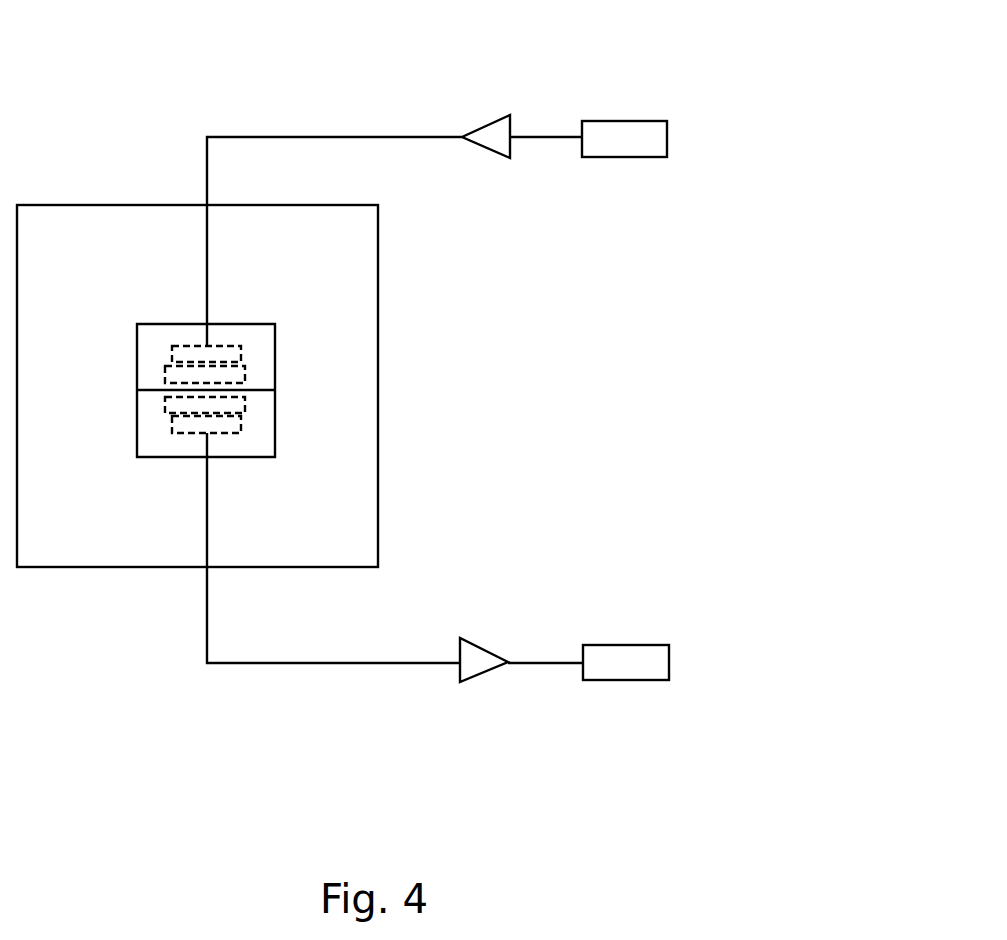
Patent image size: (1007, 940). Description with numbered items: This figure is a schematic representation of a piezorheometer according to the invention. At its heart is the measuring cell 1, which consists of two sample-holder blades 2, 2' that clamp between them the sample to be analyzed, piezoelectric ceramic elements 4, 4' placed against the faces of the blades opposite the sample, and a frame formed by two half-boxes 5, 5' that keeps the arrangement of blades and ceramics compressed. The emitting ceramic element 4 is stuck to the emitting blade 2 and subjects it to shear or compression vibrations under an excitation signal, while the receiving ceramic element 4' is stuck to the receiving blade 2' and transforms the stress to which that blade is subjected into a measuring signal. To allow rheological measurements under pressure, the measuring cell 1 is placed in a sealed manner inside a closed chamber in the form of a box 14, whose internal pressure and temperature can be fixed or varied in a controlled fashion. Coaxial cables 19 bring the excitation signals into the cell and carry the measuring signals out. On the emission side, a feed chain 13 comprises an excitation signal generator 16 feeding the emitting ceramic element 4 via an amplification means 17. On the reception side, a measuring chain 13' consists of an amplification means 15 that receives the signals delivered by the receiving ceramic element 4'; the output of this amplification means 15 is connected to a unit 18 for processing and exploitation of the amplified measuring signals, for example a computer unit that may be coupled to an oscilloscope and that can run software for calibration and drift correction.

The measuring cell 1 is at (138, 510).
The emitting blade 2 is at (313, 387).
The receiving blade 2' is at (328, 436).
The emitting ceramic element 4 is at (302, 315).
The receiving ceramic element 4' is at (323, 495).
The half-box 5 is at (291, 354).
The half-box 5' is at (314, 455).
The feed chain 13 is at (546, 77).
The measuring chain 13' is at (562, 730).
The box 14 is at (380, 417).
The amplification means 15 is at (478, 663).
The excitation signal generator 16 is at (615, 138).
The amplification means 17 is at (497, 138).
The processing and exploitation unit 18 is at (614, 663).
The coaxial cables 19 is at (208, 270).